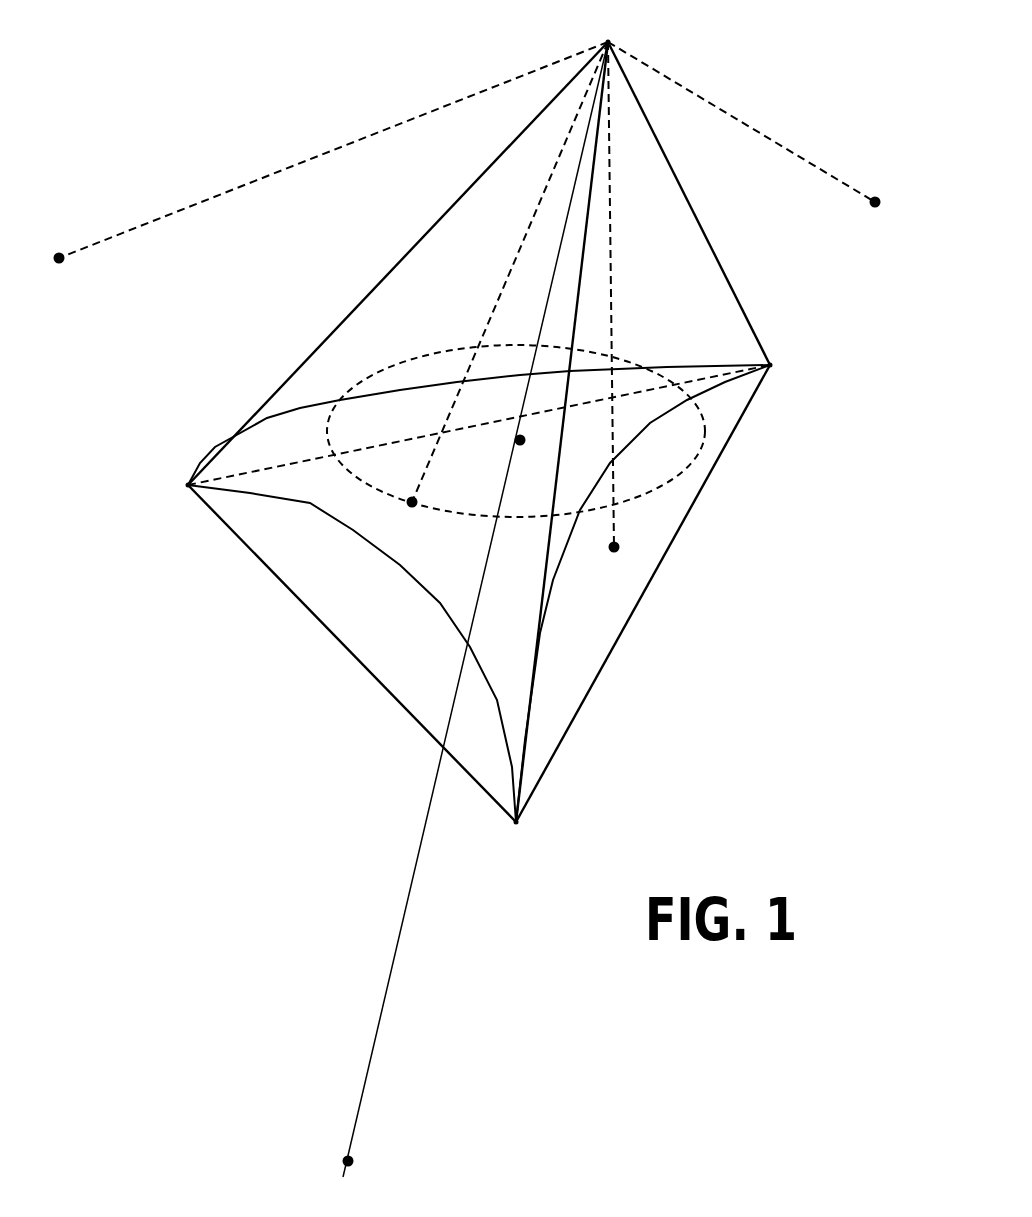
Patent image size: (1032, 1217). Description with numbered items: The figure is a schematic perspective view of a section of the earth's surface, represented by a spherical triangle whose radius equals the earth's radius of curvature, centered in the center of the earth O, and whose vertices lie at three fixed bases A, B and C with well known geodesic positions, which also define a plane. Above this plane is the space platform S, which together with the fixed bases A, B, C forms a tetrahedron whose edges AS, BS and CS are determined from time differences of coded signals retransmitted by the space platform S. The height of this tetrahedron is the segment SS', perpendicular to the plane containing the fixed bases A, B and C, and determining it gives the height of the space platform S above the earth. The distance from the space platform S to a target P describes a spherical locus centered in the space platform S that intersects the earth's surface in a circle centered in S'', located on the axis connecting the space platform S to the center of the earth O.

The space platform S is at (608, 25).
The first fixed base A is at (513, 840).
The second fixed base B is at (173, 486).
The third fixed base C is at (784, 366).
The foot of the tetrahedron height S' is at (617, 566).
The center of the circular intersection S'' is at (500, 452).
The target P is at (62, 262).
The center of the earth O is at (368, 1163).